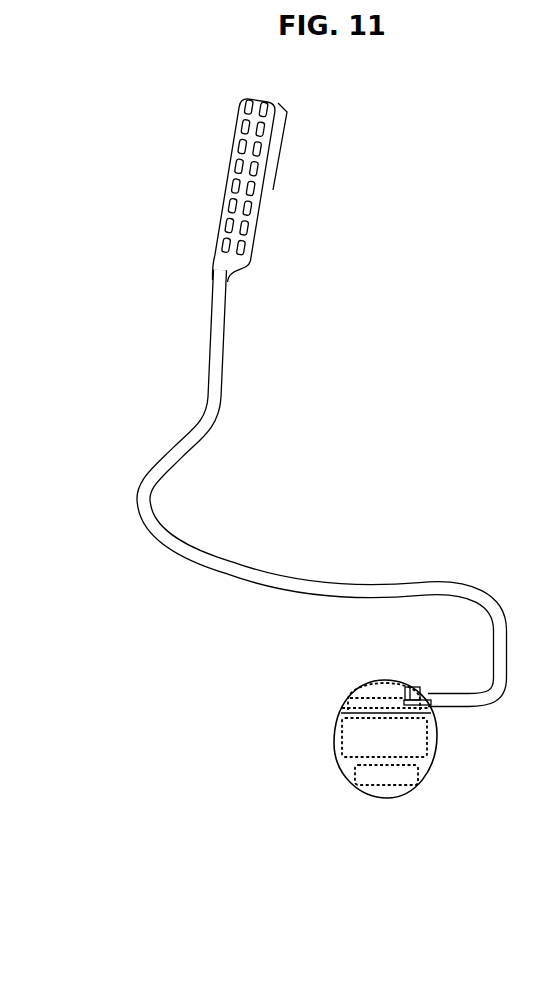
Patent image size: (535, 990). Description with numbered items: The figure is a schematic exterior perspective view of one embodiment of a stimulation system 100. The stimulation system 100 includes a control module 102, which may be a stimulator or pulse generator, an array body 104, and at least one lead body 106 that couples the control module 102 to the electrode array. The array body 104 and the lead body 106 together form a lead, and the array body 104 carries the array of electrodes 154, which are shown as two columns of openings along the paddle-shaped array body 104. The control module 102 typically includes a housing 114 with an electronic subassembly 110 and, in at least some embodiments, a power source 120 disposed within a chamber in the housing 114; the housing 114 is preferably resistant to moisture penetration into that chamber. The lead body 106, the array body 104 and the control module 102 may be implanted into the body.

The stimulation system 100 is at (436, 210).
The control module 102 is at (341, 713).
The array body 104 is at (273, 190).
The lead body 106 is at (225, 347).
The electronic subassembly 110 is at (385, 740).
The housing 114 is at (390, 679).
The power source 120 is at (387, 775).
The electrodes 154 is at (238, 163).